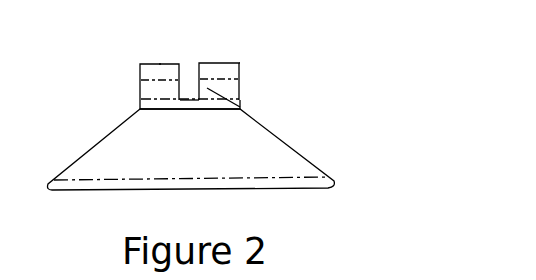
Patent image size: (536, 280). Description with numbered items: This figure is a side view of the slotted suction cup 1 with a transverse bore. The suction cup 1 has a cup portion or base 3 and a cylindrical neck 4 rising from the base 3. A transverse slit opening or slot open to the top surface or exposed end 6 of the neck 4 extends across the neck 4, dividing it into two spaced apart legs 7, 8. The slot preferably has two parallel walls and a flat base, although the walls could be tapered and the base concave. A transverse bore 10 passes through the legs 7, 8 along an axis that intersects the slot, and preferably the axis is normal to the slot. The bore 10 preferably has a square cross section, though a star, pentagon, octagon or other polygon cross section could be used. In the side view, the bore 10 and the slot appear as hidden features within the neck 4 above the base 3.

The slotted suction cup 1 is at (242, 53).
The cup portion or base 3 is at (97, 153).
The cylindrical neck 4 is at (233, 72).
The top surface or exposed end 6 is at (160, 64).
The leg 7 is at (140, 72).
The leg 8 is at (243, 105).
The transverse bore 10 is at (228, 88).